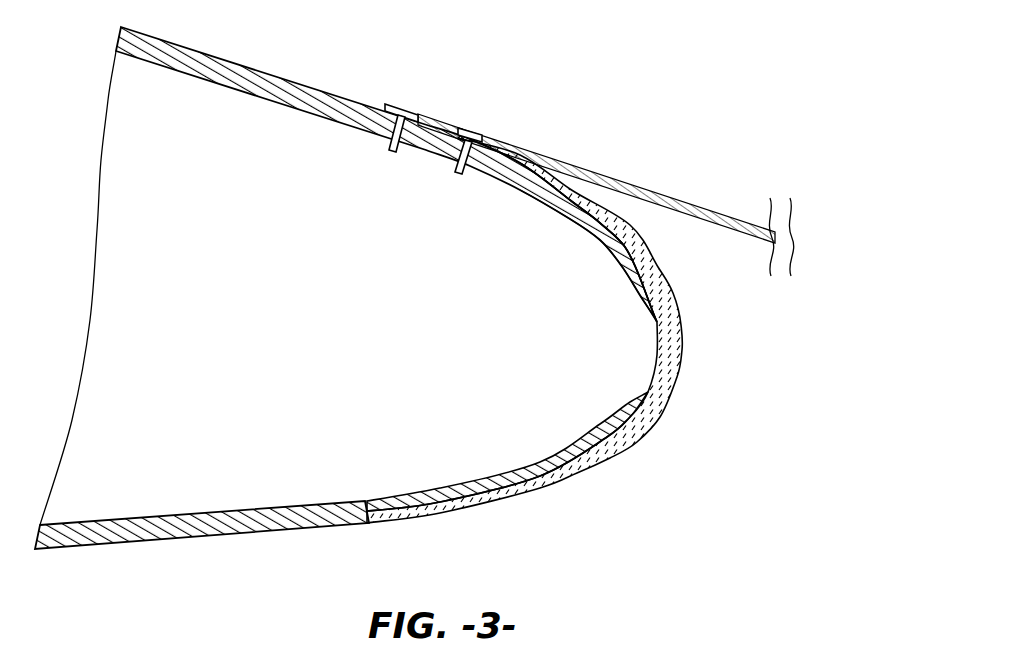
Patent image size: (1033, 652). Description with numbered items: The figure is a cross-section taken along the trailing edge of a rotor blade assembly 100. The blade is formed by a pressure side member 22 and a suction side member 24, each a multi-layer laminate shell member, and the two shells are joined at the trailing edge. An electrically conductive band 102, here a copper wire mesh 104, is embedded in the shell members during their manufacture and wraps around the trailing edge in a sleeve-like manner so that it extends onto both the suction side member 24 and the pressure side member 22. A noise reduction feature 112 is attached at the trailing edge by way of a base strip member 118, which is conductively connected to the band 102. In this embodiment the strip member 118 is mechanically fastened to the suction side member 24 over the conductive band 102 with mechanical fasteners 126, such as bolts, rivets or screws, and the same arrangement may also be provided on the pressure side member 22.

The rotor blade assembly 100 is at (686, 98).
The suction side member 24 is at (305, 85).
The pressure side member 22 is at (218, 537).
The conductive band 102 is at (628, 441).
The wire mesh 104 is at (636, 242).
The noise reduction feature 112 is at (668, 193).
The base strip member 118 is at (492, 134).
The mechanical fasteners 126 is at (412, 106).